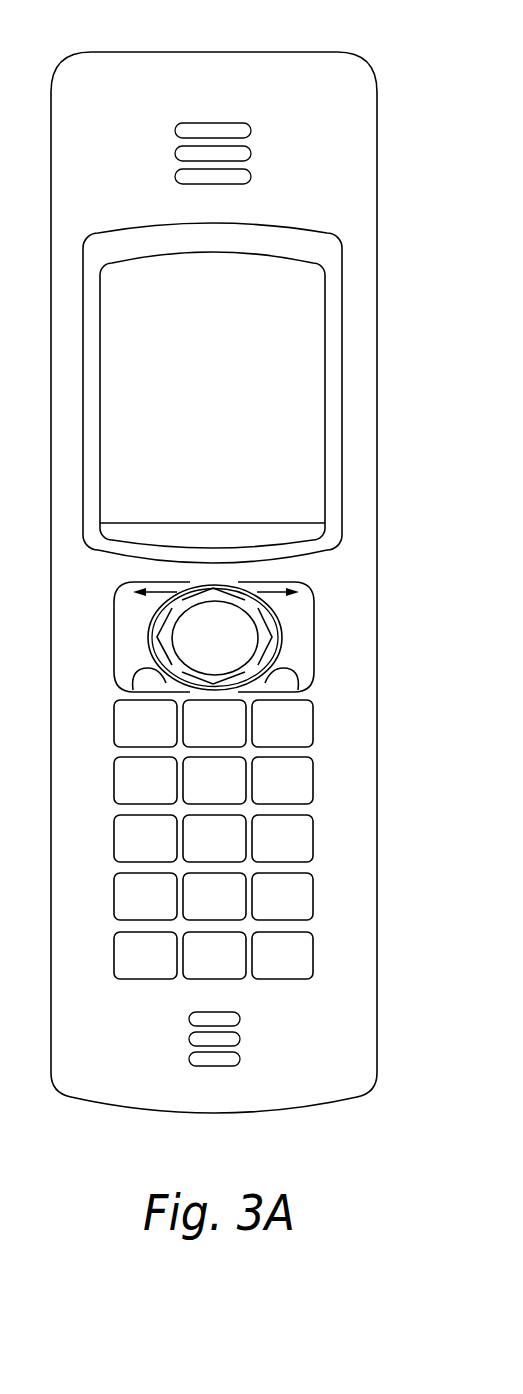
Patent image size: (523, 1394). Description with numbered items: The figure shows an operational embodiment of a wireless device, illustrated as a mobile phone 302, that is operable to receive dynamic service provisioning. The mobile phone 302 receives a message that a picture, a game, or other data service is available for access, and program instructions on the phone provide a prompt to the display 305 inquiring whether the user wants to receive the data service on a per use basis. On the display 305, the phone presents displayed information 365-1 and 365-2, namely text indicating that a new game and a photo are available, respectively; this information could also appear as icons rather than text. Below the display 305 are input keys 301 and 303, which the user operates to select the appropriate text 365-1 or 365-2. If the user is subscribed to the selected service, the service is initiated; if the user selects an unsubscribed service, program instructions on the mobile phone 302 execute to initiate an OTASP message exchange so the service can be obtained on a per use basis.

The mobile phone 302 is at (213, 52).
The display 305 is at (325, 418).
The displayed information 365-1 is at (363, 287).
The displayed information 365-2 is at (363, 455).
The input keys 301 is at (237, 637).
The input keys 303 is at (375, 698).